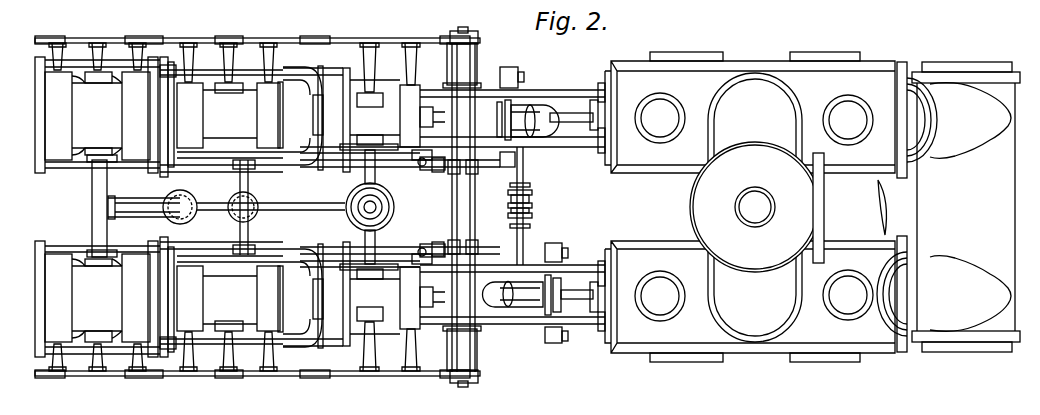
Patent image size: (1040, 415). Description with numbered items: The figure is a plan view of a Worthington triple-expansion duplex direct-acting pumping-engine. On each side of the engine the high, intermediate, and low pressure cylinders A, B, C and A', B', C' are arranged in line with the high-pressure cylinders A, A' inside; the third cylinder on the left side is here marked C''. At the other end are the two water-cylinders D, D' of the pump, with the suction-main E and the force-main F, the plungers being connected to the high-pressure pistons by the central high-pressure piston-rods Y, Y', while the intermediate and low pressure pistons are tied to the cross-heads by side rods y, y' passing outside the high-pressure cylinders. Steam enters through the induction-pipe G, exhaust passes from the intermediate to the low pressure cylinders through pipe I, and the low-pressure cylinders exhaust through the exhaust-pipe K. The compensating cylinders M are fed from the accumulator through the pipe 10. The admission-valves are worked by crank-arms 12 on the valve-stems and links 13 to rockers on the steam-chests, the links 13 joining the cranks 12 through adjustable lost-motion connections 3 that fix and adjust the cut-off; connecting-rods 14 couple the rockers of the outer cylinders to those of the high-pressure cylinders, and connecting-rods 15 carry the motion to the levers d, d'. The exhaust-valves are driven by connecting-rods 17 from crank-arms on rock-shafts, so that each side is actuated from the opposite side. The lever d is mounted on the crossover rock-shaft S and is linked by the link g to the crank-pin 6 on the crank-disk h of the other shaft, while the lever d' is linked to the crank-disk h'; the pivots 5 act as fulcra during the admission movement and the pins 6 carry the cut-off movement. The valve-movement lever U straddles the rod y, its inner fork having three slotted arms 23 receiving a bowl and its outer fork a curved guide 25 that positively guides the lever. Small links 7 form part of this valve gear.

The adjustable lost-motion connection 3 is at (257, 33).
The crank-arm 12 is at (50, 50).
The link 13 is at (97, 41).
The connecting-rod 14 is at (280, 30).
The connecting-rod 15 is at (436, 31).
The pivot 5 is at (456, 353).
The crank-pin 6 is at (470, 362).
The link 7 is at (472, 196).
The pipe 10 is at (522, 200).
The connecting-rod 17 is at (514, 205).
The slotted arm 23 is at (425, 171).
The curved guide 25 is at (423, 156).
The high-pressure cylinder A is at (391, 295).
The high-pressure cylinder A' is at (391, 125).
The intermediate-pressure cylinder B is at (221, 293).
The intermediate-pressure cylinder B' is at (221, 120).
The low-pressure cylinder C is at (262, 280).
The low-pressure cylinder C' is at (249, 42).
The cylinder C'' is at (97, 128).
The water-cylinder D is at (756, 299).
The water-cylinder D' is at (756, 115).
The suction-main E is at (948, 207).
The force-main F is at (770, 207).
The induction-pipe G is at (369, 207).
The pipe I is at (148, 208).
The exhaust-pipe K is at (303, 133).
The compensating cylinder M is at (530, 115).
The crossover rock-shaft S is at (455, 207).
The valve-movement lever U is at (462, 209).
The high-pressure piston-rod Y is at (432, 322).
The high-pressure piston-rod Y' is at (432, 91).
The side rod y is at (415, 286).
The side rod y' is at (393, 115).
The lever d is at (461, 384).
The lever d' is at (470, 31).
The link g is at (462, 377).
The crank-disk h is at (476, 348).
The crank-disk h' is at (462, 65).